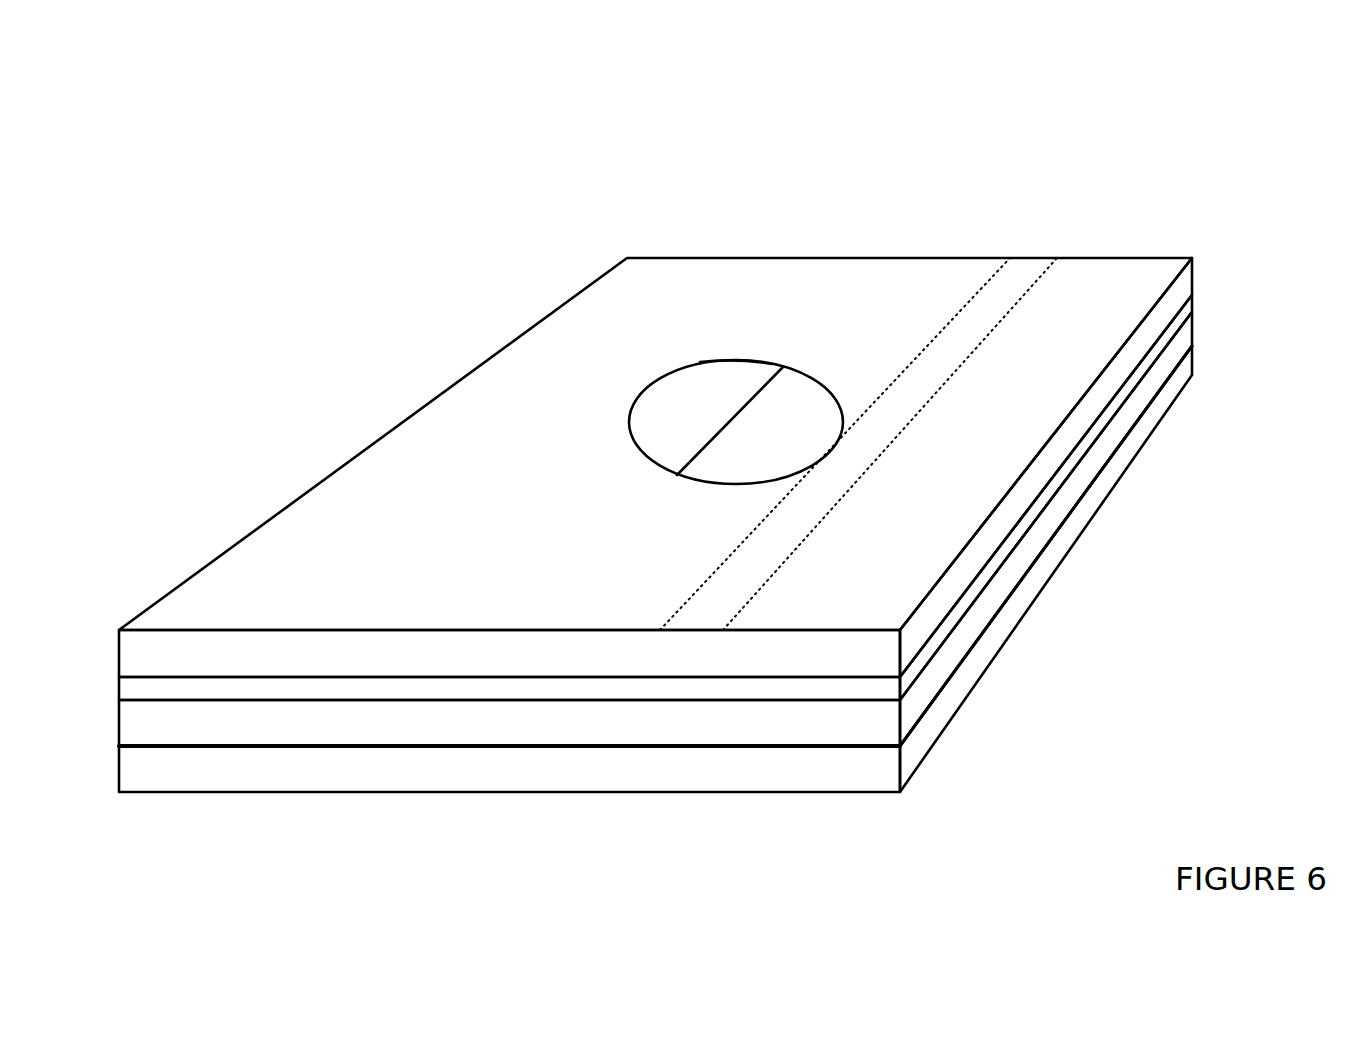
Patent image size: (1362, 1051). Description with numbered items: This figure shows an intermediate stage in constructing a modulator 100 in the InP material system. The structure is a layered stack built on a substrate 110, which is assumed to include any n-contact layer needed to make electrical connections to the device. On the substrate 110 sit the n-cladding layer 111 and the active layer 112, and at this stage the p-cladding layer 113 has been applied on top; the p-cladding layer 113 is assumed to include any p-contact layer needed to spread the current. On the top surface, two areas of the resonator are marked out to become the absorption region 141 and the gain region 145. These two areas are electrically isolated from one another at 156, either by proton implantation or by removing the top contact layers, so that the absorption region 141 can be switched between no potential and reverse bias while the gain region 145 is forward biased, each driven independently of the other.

The laminated structure 100 is at (276, 129).
The substrate 110 is at (870, 782).
The n-cladding layer 111 is at (898, 723).
The active layer 112 is at (880, 689).
The p-cladding layer 113 is at (873, 648).
The absorption region 141 is at (712, 470).
The gain region 145 is at (640, 418).
The electrical isolation 156 is at (725, 361).